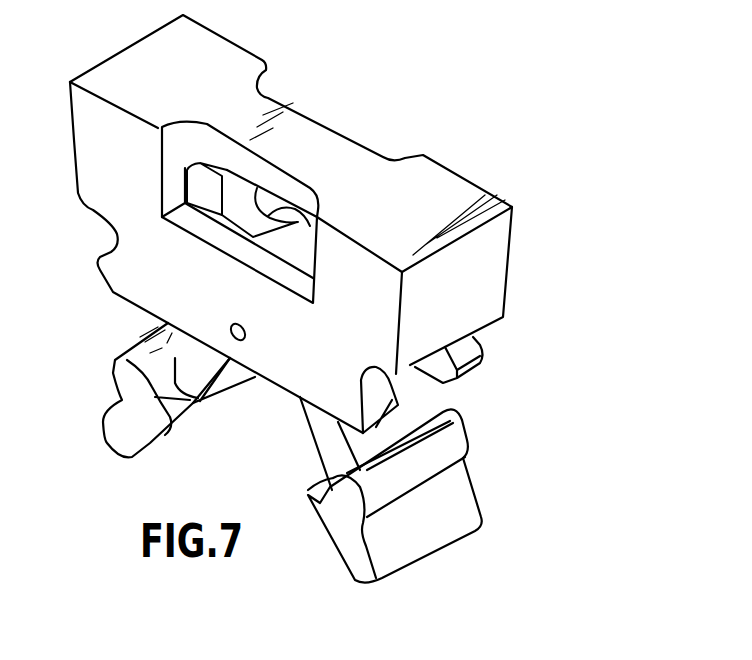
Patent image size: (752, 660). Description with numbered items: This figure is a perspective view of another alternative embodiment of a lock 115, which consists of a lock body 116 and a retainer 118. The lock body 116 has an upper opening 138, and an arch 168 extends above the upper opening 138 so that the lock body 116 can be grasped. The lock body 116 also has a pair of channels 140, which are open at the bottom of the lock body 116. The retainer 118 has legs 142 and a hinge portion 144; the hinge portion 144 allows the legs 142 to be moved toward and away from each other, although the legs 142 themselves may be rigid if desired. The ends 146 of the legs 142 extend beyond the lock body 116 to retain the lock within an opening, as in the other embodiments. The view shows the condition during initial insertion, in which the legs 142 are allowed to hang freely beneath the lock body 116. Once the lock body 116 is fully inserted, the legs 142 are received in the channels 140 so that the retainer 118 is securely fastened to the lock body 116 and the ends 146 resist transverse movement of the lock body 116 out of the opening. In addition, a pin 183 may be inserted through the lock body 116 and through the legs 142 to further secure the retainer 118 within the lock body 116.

The lock 115 is at (488, 102).
The lock body 116 is at (483, 260).
The arch 168 is at (313, 133).
The hinge portion 144 is at (203, 187).
The upper opening 138 is at (247, 220).
The pin 183 is at (247, 333).
The channels 140 is at (418, 390).
The legs 142 is at (322, 437).
The retainer 118 is at (430, 527).
The ends 146 is at (125, 438).